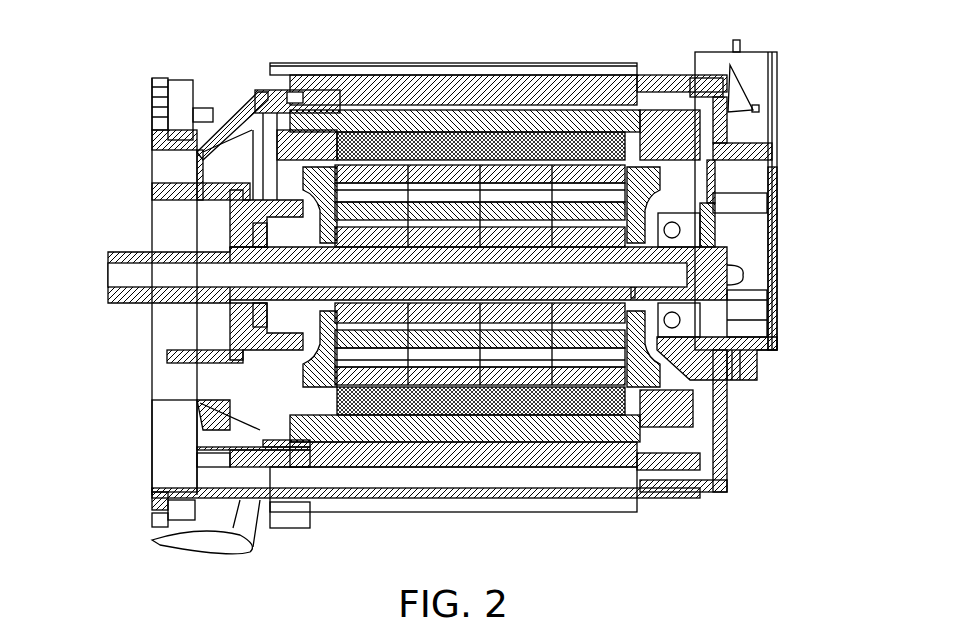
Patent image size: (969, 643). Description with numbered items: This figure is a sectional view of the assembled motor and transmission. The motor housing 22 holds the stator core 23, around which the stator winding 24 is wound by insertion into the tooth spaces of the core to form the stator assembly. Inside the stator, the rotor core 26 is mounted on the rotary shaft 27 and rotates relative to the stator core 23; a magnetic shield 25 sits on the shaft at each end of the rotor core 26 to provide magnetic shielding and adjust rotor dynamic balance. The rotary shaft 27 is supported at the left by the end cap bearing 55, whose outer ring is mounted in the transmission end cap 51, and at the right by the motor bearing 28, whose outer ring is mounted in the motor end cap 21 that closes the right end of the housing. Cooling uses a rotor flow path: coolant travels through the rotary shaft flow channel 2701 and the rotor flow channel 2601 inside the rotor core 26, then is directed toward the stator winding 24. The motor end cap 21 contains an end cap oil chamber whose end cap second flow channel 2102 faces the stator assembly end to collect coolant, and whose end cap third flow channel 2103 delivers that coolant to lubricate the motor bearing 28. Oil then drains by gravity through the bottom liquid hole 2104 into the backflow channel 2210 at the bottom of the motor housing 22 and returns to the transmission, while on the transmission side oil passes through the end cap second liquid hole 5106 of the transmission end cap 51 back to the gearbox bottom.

The motor end cap 21 is at (778, 217).
The end cap second flow channel 2102 is at (730, 65).
The end cap third flow channel 2103 is at (740, 147).
The bottom liquid hole 2104 is at (713, 490).
The motor housing 22 is at (531, 90).
The stator core 23 is at (455, 125).
The stator winding 24 is at (300, 148).
The magnetic shield 25 is at (322, 188).
The rotor core 26 is at (365, 325).
The rotor flow channel 2601 is at (387, 352).
The rotary shaft 27 is at (247, 293).
The rotary shaft flow channel 2701 is at (183, 277).
The motor bearing 28 is at (690, 322).
The transmission end cap 51 is at (180, 128).
The end cap bearing 55 is at (283, 225).
The end cap second liquid hole 5106 is at (235, 418).
The backflow channel 2210 is at (200, 528).